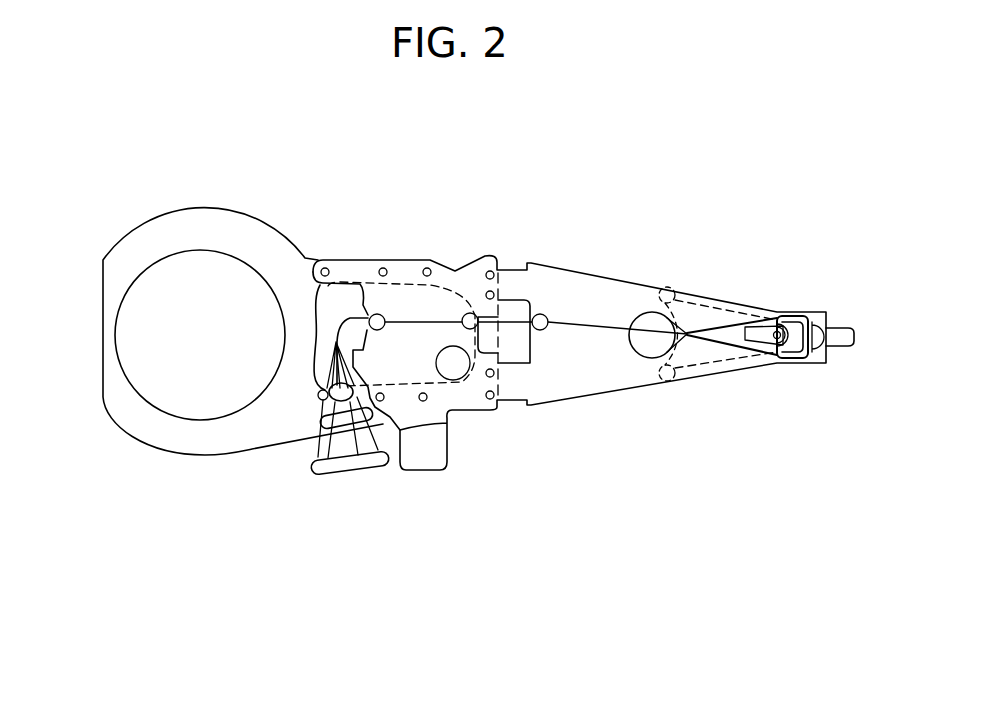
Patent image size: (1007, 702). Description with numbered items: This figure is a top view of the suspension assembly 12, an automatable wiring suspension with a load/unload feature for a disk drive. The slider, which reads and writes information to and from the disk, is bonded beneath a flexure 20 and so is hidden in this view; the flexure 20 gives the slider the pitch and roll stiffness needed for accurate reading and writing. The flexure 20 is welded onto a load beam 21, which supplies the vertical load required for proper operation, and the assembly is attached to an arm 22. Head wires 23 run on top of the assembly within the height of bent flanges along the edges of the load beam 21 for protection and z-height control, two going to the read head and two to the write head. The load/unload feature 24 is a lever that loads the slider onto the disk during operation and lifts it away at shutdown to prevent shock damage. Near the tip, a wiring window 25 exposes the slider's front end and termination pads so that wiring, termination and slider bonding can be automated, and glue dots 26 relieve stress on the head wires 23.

The suspension assembly 12 is at (122, 475).
The flexure 20 is at (686, 298).
The load beam 21 is at (582, 292).
The arm 22 is at (157, 237).
The head wires 23 is at (655, 336).
The load/unload feature 24 is at (845, 338).
The wiring window 25 is at (808, 330).
The glue dots 26 is at (466, 314).